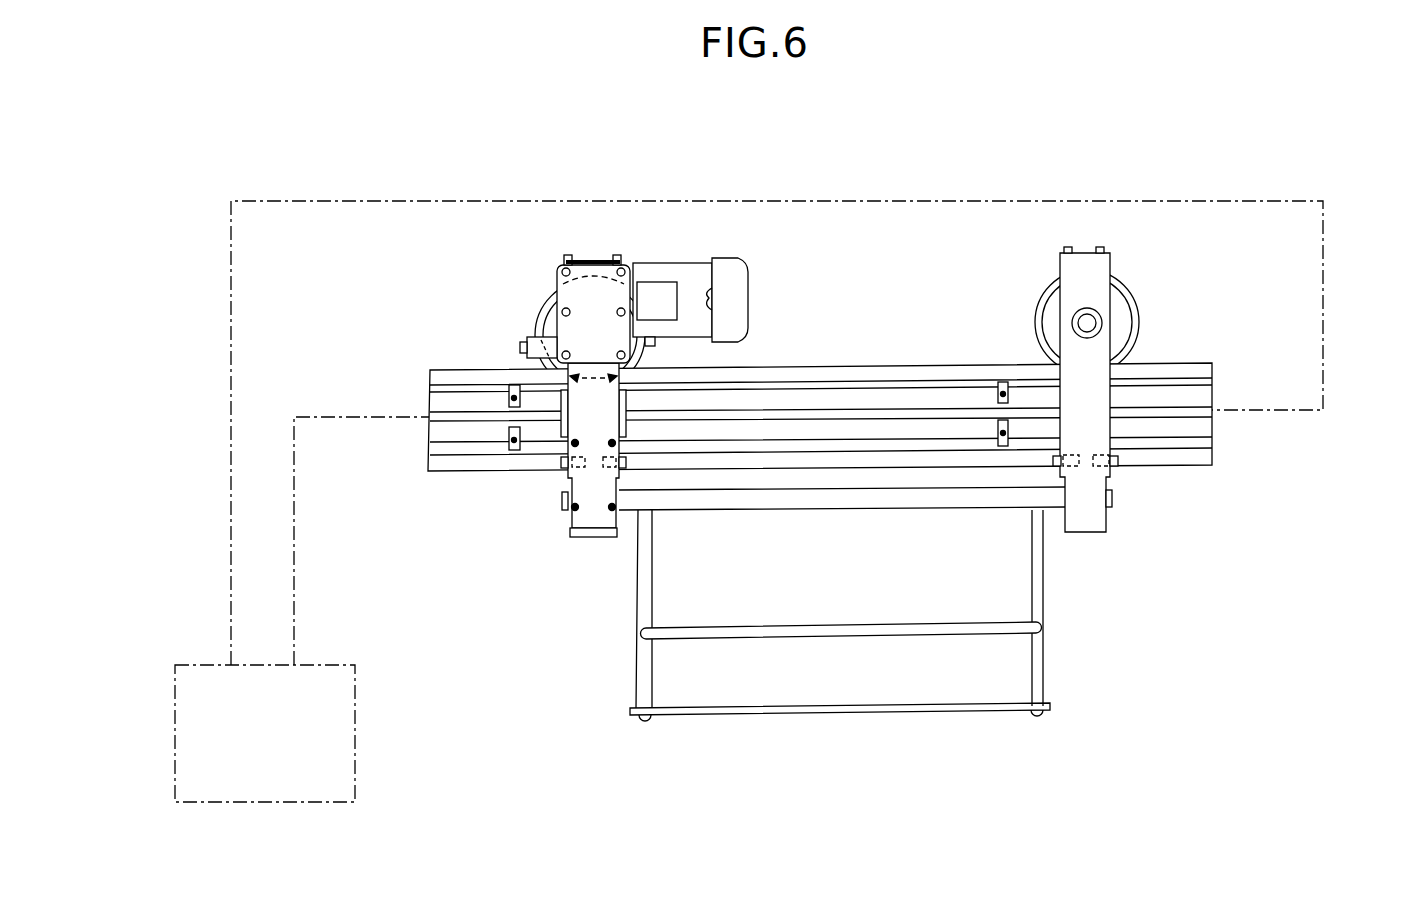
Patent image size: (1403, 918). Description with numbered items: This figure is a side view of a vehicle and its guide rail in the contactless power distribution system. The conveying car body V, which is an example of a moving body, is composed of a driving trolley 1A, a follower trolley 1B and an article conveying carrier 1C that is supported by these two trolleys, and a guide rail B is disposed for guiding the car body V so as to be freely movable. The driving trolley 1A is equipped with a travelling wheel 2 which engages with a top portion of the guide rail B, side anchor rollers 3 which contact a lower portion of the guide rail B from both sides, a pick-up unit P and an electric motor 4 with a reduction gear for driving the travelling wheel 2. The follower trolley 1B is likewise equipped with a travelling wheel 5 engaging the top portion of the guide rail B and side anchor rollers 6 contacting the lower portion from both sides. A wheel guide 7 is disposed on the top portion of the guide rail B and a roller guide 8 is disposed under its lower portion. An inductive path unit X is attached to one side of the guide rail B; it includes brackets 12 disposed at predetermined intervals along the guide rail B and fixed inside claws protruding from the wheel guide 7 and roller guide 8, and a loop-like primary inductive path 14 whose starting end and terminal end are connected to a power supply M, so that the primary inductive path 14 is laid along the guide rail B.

The driving trolley 1A is at (537, 287).
The follower trolley 1B is at (1031, 279).
The article conveying carrier 1C is at (1054, 640).
The travelling wheel 2 is at (637, 347).
The side anchor rollers 3 is at (560, 466).
The electric motor 4 is at (651, 273).
The travelling wheel 5 is at (1125, 296).
The side anchor rollers 6 is at (1052, 462).
The wheel guide 7 is at (876, 372).
The roller guide 8 is at (819, 466).
The brackets 12 is at (506, 392).
The primary inductive path 14 is at (401, 418).
The guide rail B is at (1156, 357).
The power supply M is at (318, 663).
The pick-up unit P is at (553, 431).
The conveying car body V is at (1150, 260).
The inductive path unit X is at (929, 400).